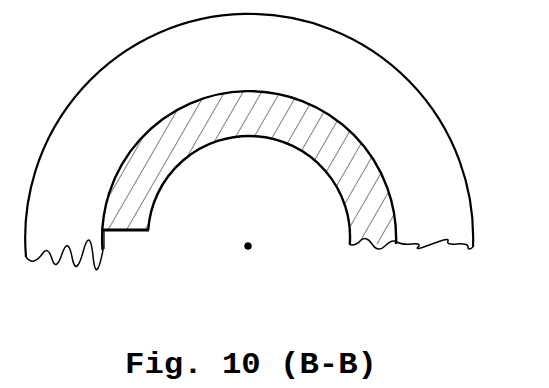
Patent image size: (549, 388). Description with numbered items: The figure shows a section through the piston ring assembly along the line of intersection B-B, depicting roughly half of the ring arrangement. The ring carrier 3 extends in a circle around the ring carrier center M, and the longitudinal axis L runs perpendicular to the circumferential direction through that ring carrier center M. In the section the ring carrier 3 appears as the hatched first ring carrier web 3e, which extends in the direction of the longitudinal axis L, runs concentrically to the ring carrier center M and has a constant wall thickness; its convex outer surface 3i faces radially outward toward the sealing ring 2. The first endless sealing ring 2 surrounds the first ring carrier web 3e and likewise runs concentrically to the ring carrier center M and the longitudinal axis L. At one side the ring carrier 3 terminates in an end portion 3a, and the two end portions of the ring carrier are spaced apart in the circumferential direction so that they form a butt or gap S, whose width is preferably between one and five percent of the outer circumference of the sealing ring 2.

The sealing ring 2 is at (438, 221).
The ring carrier 3 is at (280, 184).
The end portion 3a is at (113, 241).
The first ring carrier web 3e is at (196, 147).
The convex outer surface 3i is at (388, 161).
The gap S is at (130, 236).
The ring carrier center M is at (248, 246).
The longitudinal axis L is at (248, 246).